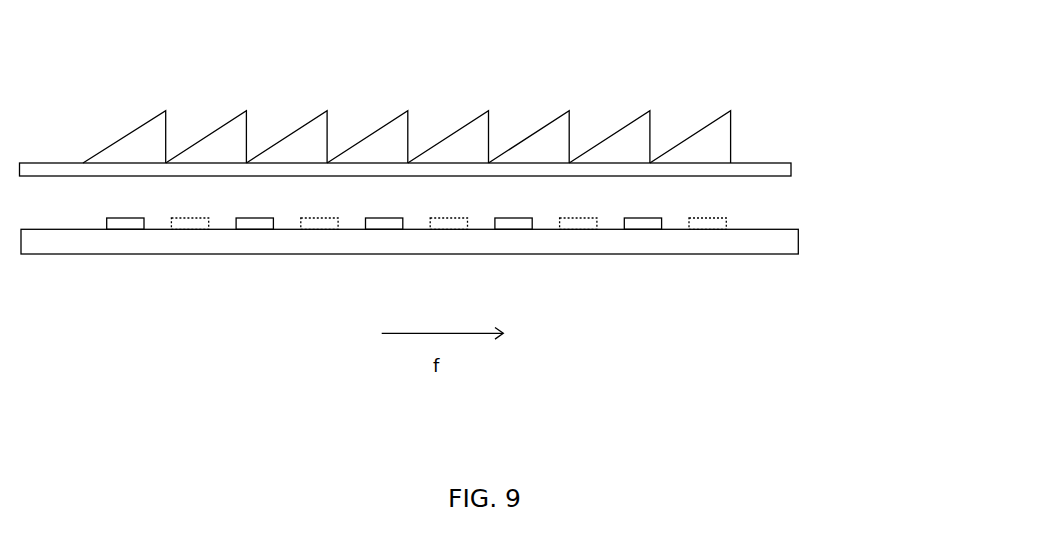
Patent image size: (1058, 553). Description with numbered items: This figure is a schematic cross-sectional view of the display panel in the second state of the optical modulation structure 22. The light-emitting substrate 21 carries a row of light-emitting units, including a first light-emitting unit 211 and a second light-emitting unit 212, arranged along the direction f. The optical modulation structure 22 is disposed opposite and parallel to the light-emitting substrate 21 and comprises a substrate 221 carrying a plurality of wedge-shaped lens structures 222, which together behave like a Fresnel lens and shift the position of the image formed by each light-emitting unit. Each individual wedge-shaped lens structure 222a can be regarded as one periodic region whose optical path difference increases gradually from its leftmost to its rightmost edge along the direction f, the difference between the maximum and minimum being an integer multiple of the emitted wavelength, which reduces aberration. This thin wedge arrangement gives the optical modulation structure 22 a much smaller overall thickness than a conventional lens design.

The light-emitting substrate 21 is at (409, 330).
The first light-emitting unit 211 is at (120, 238).
The second light-emitting unit 212 is at (258, 238).
The optical modulation structure 22 is at (474, 114).
The substrate 221 is at (798, 169).
The wedge-shaped lens structures 222 is at (475, 106).
The wedge-shaped lens structure 222a is at (138, 119).